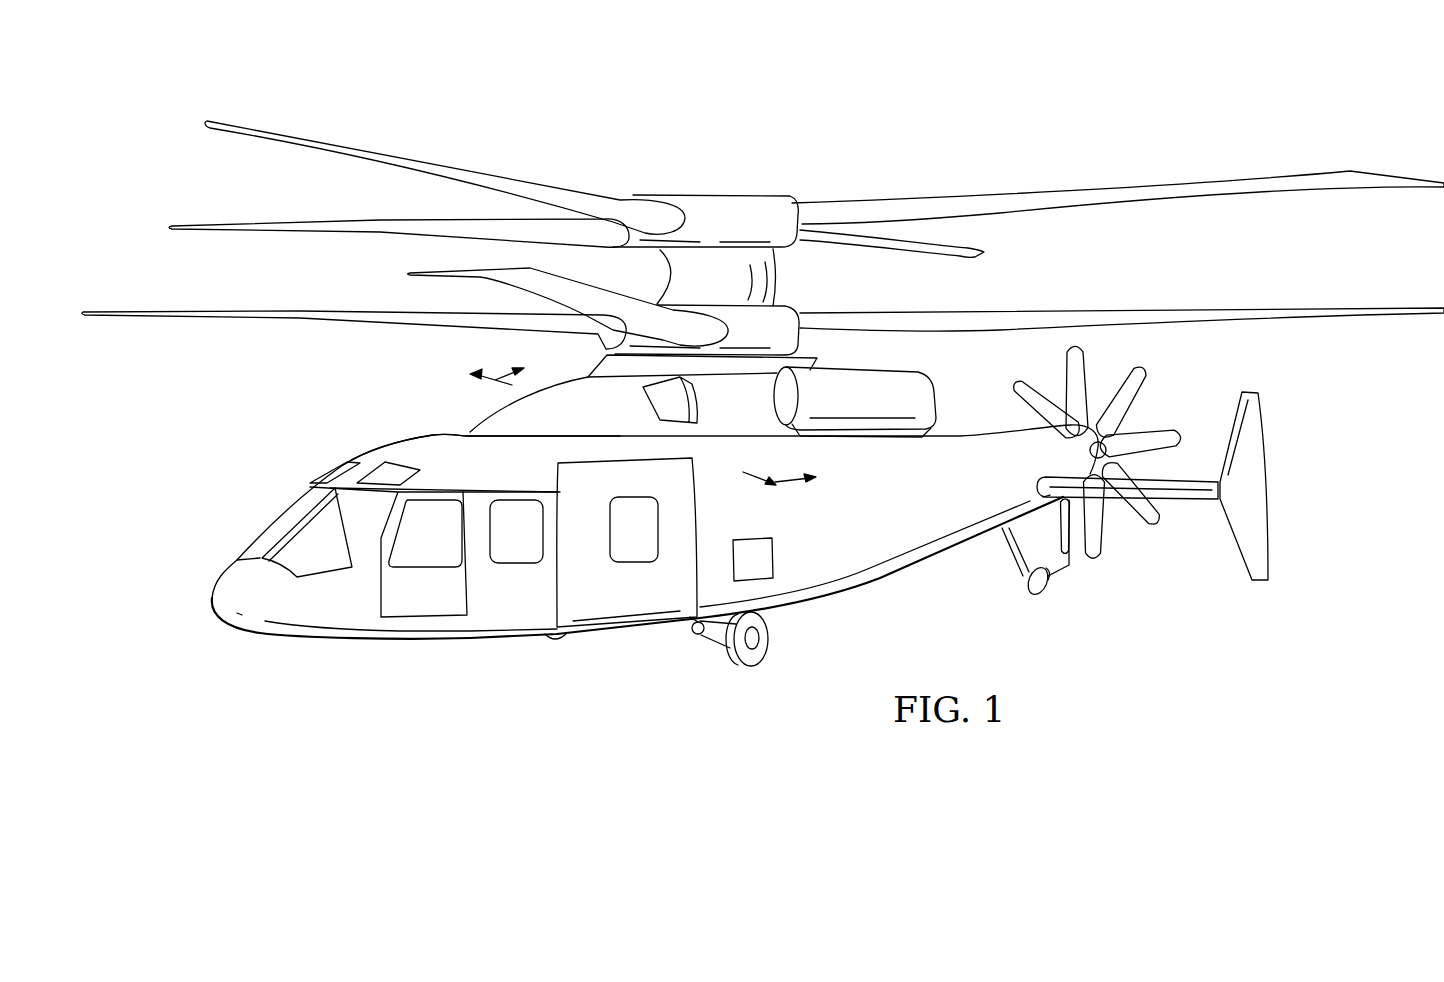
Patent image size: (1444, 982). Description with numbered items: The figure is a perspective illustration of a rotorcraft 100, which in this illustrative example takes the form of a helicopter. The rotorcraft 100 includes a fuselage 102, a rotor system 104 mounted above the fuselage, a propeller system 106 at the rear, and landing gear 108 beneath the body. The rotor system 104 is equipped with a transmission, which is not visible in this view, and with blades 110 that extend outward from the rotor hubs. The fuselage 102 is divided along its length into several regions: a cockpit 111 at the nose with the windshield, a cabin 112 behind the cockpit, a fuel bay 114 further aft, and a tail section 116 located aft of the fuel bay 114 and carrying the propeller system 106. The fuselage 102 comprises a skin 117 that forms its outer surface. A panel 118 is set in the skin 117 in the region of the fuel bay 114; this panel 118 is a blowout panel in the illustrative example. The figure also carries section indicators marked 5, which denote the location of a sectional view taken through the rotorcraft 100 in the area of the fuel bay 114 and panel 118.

The rotorcraft 100 is at (237, 396).
The fuselage 102 is at (423, 640).
The rotor system 104 is at (740, 173).
The propeller system 106 is at (1158, 401).
The landing gear 108 is at (743, 679).
The blades 110 is at (383, 151).
The cockpit 111 is at (310, 538).
The cabin 112 is at (443, 455).
The fuel bay 114 is at (803, 534).
The tail section 116 is at (986, 440).
The skin 117 is at (640, 598).
The panel 118 is at (740, 540).
The section line of FIG. 5 is at (652, 422).